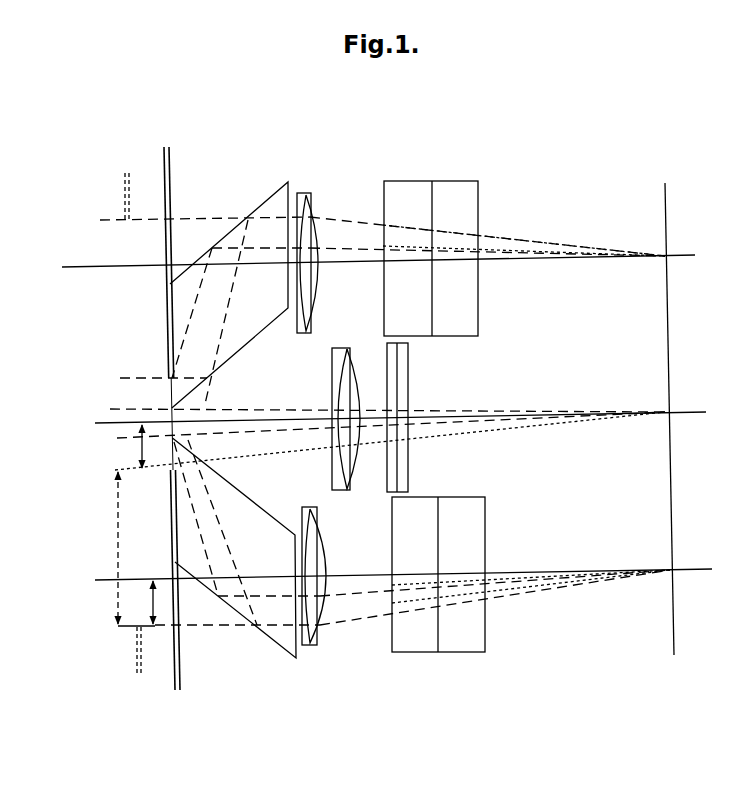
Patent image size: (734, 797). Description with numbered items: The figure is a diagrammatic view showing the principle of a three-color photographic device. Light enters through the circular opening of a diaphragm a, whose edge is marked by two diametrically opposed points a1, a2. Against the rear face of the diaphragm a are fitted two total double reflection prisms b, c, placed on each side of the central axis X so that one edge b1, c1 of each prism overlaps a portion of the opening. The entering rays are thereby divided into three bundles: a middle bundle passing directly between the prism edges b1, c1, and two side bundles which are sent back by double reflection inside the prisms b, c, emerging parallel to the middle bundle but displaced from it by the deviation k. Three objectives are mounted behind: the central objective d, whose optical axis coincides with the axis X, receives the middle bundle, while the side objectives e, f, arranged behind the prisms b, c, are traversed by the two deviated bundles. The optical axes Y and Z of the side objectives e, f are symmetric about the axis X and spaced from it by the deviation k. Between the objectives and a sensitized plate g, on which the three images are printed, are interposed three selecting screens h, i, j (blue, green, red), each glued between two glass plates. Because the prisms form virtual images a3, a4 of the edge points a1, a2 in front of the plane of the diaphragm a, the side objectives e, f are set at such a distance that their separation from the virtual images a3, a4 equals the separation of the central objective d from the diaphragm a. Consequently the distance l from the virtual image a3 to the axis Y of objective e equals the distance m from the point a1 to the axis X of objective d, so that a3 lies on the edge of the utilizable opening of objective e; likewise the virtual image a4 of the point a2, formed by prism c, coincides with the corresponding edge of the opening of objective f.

The diaphragm a is at (166, 320).
The edge point of the diaphragm opening a1 is at (390, 518).
The edge point of the diaphragm opening a2 is at (166, 325).
The virtual image of point a1 a3 is at (219, 639).
The virtual image of point a2 a4 is at (127, 222).
The total double reflection prism b is at (234, 548).
The edge of prism b b1 is at (172, 439).
The total double reflection prism c is at (229, 295).
The edge of prism c c1 is at (171, 409).
The central objective d is at (351, 380).
The side objective e is at (314, 553).
The side objective f is at (312, 292).
The sensitized plate g is at (671, 492).
The selecting screen h is at (398, 373).
The selecting screen i is at (439, 548).
The selecting screen j is at (433, 297).
The deviation k is at (114, 548).
The distance from a3 to axis Y—Y l is at (158, 602).
The distance from a1 to axis X—X m is at (135, 446).
The central optical axis X is at (400, 419).
The optical axis of side objective e Y is at (403, 577).
The optical axis of side objective f Z is at (378, 254).